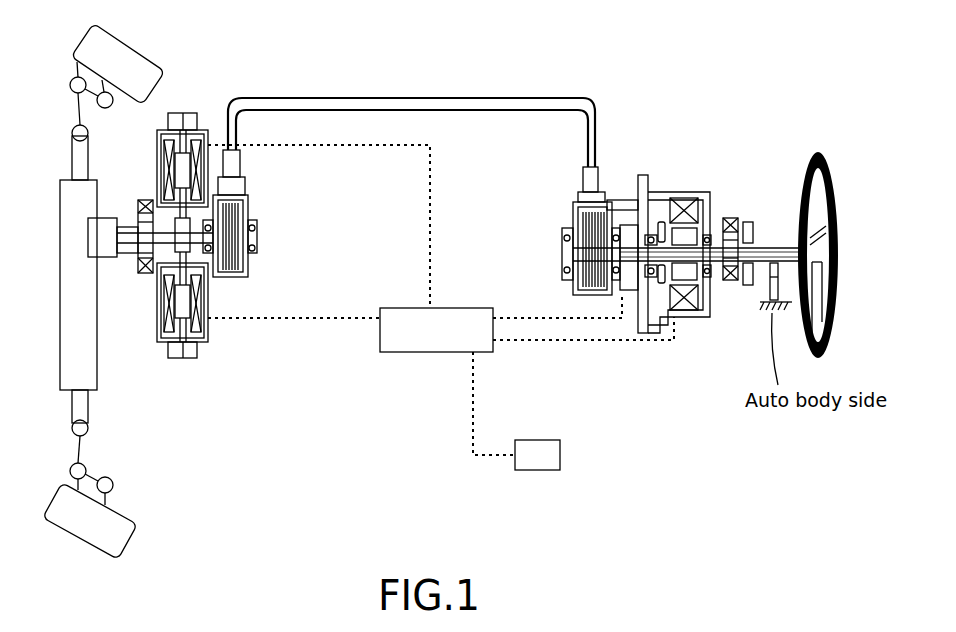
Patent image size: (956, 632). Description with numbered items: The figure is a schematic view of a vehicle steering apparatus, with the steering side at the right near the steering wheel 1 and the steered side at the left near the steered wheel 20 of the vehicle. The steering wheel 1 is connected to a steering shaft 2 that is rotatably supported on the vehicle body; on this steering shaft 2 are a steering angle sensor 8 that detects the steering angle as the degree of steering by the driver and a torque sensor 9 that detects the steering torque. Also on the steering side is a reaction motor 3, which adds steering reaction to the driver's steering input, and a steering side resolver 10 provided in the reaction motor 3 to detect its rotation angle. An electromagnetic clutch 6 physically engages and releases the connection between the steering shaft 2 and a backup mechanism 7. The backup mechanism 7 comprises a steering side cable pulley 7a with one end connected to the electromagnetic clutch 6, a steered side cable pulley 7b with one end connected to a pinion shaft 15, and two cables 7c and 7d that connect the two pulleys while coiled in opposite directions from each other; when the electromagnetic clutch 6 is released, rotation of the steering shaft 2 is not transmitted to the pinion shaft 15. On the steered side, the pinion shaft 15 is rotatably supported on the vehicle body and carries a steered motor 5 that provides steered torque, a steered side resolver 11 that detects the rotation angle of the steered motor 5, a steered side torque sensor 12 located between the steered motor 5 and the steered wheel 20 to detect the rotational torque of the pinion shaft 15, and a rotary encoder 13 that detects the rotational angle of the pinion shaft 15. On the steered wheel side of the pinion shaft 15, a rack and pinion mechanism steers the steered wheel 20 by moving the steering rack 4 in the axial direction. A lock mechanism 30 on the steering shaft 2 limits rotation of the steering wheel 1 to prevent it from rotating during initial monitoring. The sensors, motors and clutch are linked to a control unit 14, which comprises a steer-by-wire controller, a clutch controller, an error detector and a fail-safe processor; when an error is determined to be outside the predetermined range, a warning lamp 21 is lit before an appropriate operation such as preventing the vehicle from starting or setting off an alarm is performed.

The steering wheel 1 is at (834, 170).
The steering shaft 2 is at (707, 227).
The reaction motor 3 is at (680, 188).
The steering rack 4 is at (58, 340).
The steered motor 5 is at (208, 125).
The electromagnetic clutch 6 is at (630, 278).
The backup mechanism 7 is at (411, 90).
The steering side cable pulley 7a is at (570, 283).
The steered side cable pulley 7b is at (249, 260).
The cable 7c is at (352, 97).
The cable 7d is at (361, 112).
The steering angle sensor 8 is at (749, 218).
The torque sensor 9 is at (729, 216).
The steering side resolver 10 is at (657, 214).
The steered side resolver 11 is at (185, 108).
The steered side torque sensor 12 is at (144, 280).
The rotary encoder 13 is at (118, 264).
The control unit 14 is at (423, 357).
The pinion shaft 15 is at (162, 225).
The steered wheel 20 is at (125, 40).
The warning lamp 21 is at (540, 474).
The lock mechanism 30 is at (768, 278).